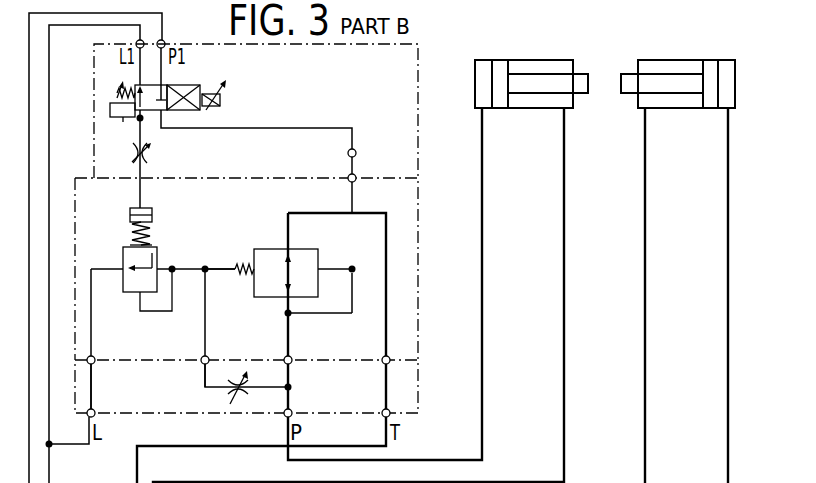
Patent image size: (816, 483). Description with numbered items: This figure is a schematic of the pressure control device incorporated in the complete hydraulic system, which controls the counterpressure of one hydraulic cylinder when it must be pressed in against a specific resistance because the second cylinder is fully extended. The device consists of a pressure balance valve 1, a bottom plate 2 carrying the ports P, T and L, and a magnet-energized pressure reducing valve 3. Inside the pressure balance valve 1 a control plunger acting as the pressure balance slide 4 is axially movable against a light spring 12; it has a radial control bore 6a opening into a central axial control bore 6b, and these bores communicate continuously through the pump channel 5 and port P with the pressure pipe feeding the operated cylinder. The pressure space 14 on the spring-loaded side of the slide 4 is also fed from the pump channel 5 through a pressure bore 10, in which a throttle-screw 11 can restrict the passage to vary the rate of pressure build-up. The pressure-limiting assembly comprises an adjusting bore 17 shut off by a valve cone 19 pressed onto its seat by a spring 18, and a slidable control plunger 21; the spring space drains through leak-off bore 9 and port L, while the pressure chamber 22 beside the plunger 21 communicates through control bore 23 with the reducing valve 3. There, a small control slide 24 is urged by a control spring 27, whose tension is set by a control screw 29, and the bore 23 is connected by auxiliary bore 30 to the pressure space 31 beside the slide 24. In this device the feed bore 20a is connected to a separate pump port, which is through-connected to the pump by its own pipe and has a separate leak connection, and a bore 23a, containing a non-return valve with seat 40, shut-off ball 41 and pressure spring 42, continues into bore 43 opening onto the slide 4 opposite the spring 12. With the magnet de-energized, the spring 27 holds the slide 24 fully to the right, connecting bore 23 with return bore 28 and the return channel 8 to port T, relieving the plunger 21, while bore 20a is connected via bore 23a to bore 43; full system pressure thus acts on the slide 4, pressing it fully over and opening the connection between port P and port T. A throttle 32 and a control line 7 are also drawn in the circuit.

The pressure balance valve 1 is at (418, 278).
The bottom plate 2 is at (418, 388).
The magnet-energized pressure reducing valve 3 is at (418, 118).
The pressure balance slide 4 is at (300, 250).
The pump channel 5 is at (289, 398).
The radial control bore 6a is at (327, 313).
The axial control bore 6b is at (352, 302).
The control line 7 is at (335, 269).
The return channel 8 is at (386, 386).
The leak-off bore 9 is at (91, 388).
The pressure bore 10 is at (205, 376).
The throttle-screw 11 is at (240, 397).
The light spring 12 is at (238, 270).
The pressure space 14 is at (219, 269).
The adjusting bore 17 is at (128, 270).
The spring 18 is at (131, 239).
The valve cone 19 is at (157, 252).
The bore 20a is at (163, 71).
The control plunger 21 is at (131, 226).
The pressure chamber 22 is at (130, 213).
The control bore 23 is at (136, 192).
The bore 23a is at (262, 128).
The control slide 24 is at (183, 128).
The control spring 27 is at (117, 93).
The return bore 28 is at (140, 71).
The control screw 29 is at (117, 85).
The auxiliary bore 30 is at (123, 122).
The pressure space 31 is at (112, 105).
The throttle 32 is at (133, 152).
The seat 40 is at (357, 152).
The shut-off ball 41 is at (348, 152).
The pressure spring 42 is at (348, 177).
The bore 43 is at (352, 195).